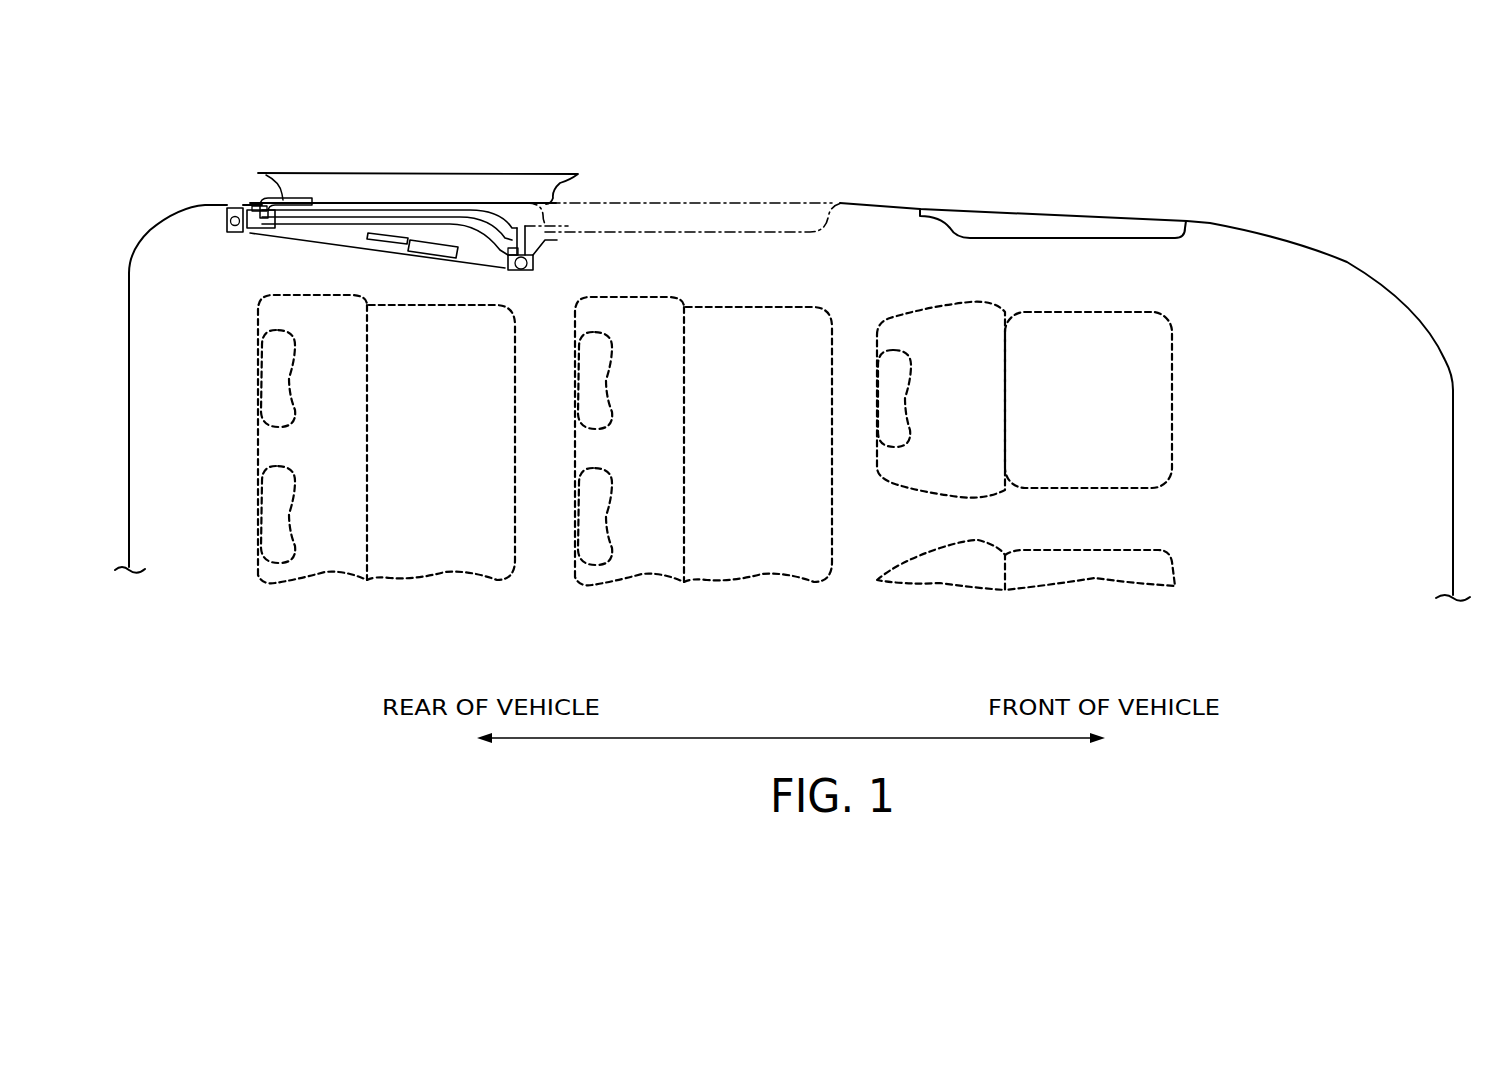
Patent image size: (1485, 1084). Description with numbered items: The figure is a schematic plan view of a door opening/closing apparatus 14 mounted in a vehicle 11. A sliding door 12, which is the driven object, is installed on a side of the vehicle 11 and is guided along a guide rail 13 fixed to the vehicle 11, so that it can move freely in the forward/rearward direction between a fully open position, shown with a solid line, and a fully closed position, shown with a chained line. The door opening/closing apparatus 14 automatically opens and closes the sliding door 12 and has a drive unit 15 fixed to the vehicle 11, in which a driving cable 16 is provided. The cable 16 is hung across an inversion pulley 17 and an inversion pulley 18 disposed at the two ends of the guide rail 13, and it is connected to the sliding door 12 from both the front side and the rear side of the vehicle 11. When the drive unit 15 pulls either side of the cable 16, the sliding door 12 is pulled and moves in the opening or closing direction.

The vehicle 11 is at (1248, 216).
The sliding door 12 is at (460, 165).
The guide rail 13 is at (397, 194).
The door opening/closing apparatus 14 is at (410, 272).
The drive unit 15 is at (385, 248).
The cable 16 is at (295, 240).
The inversion pulley 17 is at (228, 222).
The inversion pulley 18 is at (540, 258).